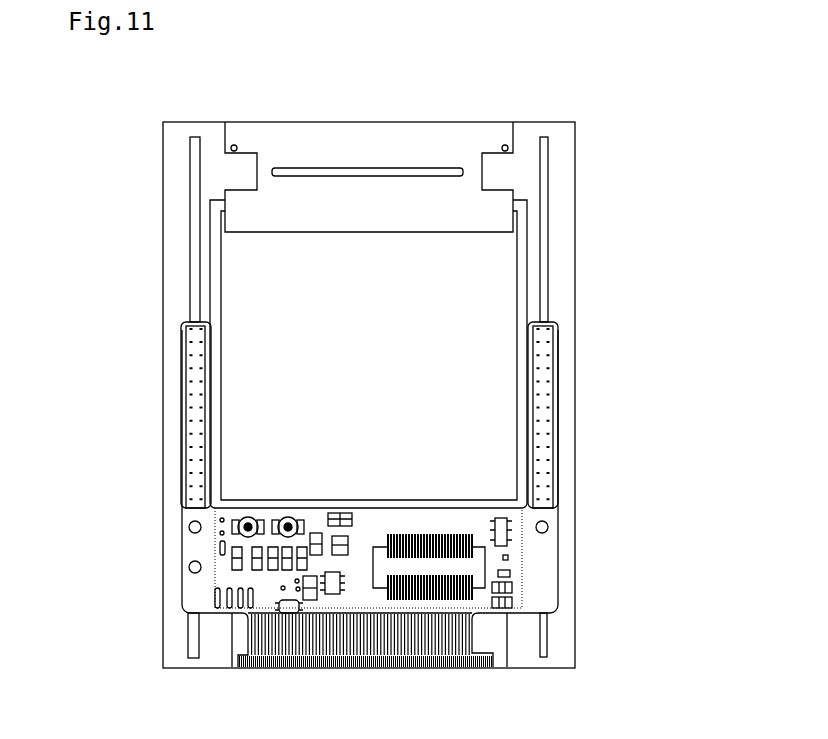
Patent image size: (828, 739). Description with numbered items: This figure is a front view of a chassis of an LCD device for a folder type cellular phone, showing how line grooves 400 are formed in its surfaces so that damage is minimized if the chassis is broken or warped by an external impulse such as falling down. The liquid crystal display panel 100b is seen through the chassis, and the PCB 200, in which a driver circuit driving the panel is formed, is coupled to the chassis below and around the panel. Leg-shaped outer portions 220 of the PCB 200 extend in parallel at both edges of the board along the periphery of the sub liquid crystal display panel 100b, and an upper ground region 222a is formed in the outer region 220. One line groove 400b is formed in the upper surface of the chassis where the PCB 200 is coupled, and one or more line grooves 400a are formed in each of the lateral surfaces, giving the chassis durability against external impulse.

The line groove 400 is at (558, 193).
The line groove 400a is at (190, 222).
The line groove 400b is at (405, 172).
The liquid crystal display panel 100b is at (428, 300).
The outer portion 220 is at (558, 455).
The upper ground region 222a is at (545, 390).
The PCB 200 is at (360, 593).